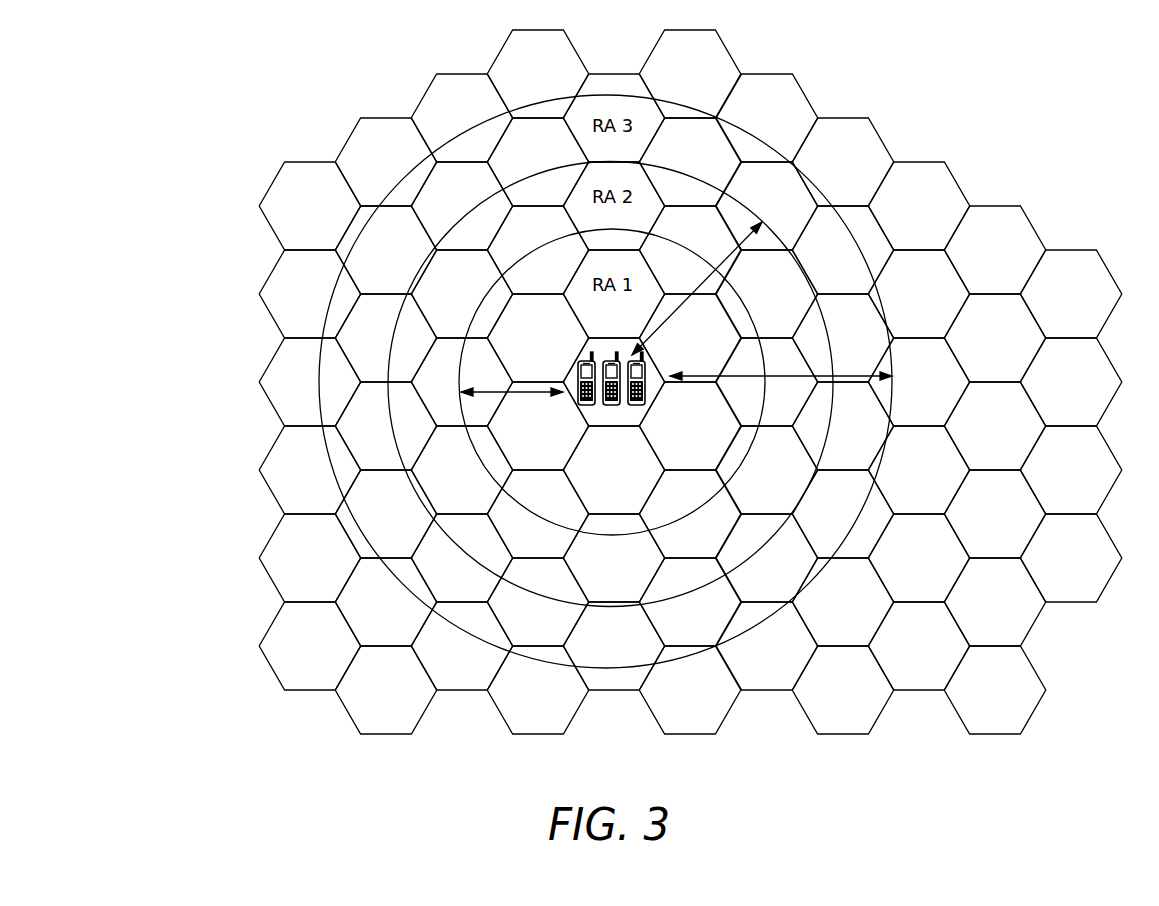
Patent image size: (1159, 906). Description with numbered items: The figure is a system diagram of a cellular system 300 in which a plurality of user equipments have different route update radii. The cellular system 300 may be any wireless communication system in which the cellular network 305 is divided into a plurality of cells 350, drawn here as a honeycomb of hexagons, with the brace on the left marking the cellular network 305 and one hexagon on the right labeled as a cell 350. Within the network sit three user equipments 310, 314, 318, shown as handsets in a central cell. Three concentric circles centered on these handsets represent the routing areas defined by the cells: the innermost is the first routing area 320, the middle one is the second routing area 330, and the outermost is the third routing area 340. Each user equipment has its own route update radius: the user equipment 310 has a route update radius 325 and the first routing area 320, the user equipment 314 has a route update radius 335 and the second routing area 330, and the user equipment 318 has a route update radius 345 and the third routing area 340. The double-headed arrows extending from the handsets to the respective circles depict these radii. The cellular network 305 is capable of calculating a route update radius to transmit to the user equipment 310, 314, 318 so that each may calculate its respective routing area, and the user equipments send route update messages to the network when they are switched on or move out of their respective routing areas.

The cellular system 300 is at (1050, 88).
The cellular network 305 is at (240, 203).
The user equipment 310 is at (577, 397).
The user equipment 314 is at (613, 406).
The user equipment 318 is at (648, 397).
The routing area RA1 320 is at (722, 488).
The route update radius 325 is at (522, 388).
The routing area RA2 330 is at (822, 452).
The route update radius 335 is at (740, 240).
The routing area RA3 340 is at (892, 403).
The route update radius 345 is at (857, 374).
The cell 350 is at (1108, 270).